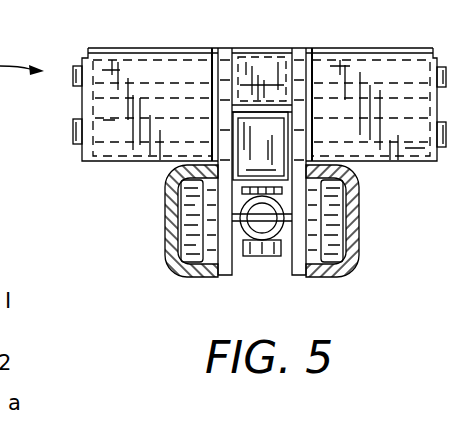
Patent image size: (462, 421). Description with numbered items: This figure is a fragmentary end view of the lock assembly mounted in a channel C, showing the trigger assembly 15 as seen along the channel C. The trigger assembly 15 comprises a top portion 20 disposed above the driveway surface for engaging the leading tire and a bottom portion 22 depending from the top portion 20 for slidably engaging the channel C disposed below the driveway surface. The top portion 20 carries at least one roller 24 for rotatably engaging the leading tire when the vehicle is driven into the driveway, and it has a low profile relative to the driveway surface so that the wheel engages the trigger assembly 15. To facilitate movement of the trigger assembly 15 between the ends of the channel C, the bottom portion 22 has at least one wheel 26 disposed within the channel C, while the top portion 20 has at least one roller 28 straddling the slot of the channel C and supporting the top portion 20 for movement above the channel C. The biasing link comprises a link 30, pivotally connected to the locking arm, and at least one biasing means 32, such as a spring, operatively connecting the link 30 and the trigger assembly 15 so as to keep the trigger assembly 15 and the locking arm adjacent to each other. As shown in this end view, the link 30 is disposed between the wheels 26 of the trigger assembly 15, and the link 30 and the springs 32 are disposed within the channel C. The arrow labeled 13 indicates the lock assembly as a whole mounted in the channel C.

The slide assembly 13 is at (84, 183).
The trigger assembly 15 is at (243, 68).
The top portion 20 is at (355, 50).
The bottom portion 22 is at (200, 273).
The roller 24 is at (110, 55).
The wheel 26 is at (183, 248).
The roller 28 is at (80, 112).
The link 30 is at (247, 258).
The biasing means 32 is at (278, 258).
The channel C is at (162, 212).